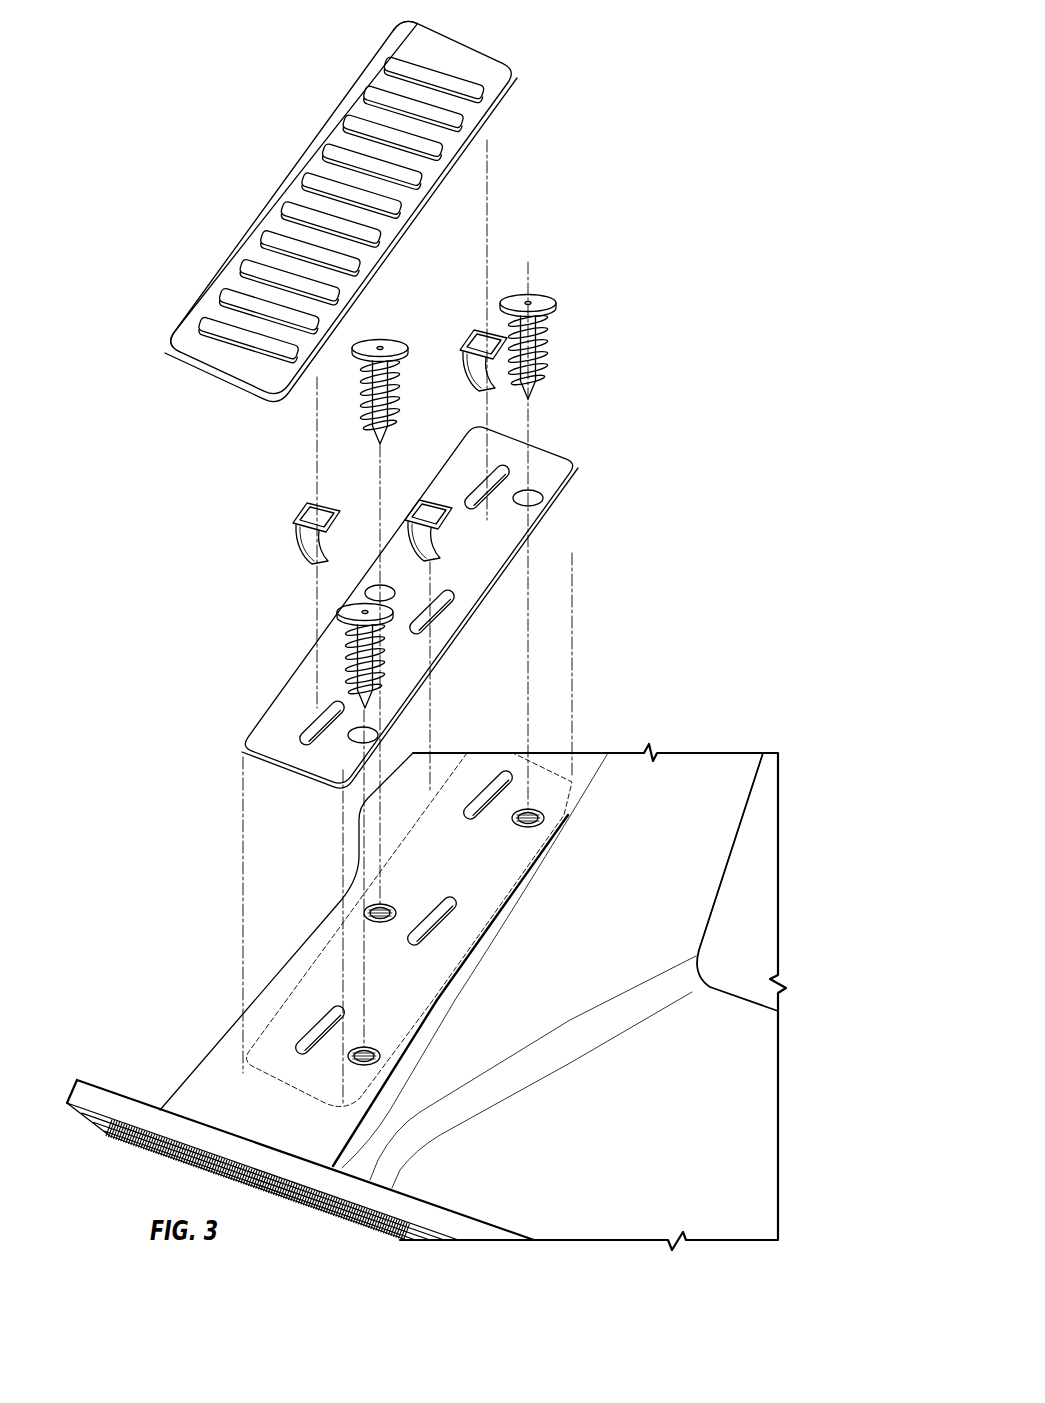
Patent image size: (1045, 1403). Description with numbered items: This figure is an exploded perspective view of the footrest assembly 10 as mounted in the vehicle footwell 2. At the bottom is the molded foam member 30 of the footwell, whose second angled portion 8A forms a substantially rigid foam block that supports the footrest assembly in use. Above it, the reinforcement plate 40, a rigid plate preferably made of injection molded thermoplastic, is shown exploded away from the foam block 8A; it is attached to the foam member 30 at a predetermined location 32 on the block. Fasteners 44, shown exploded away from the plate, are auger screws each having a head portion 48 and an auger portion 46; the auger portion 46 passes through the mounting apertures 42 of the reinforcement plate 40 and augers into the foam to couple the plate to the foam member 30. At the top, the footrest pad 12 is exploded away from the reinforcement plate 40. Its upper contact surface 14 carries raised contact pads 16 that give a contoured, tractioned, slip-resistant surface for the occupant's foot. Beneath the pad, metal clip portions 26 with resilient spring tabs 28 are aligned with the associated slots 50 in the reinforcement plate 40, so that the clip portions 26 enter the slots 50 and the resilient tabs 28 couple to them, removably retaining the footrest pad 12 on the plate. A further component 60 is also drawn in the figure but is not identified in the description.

The footwell 2 is at (718, 826).
The second angled portion 8A is at (613, 903).
The footrest assembly 10 is at (624, 172).
The footrest pad 12 is at (291, 148).
The upper contact surface 14 is at (202, 297).
The raised contact pads 16 is at (248, 263).
The metal clip portion 26 is at (478, 335).
The resilient spring tabs 28 is at (478, 383).
The foam member 30 is at (212, 1070).
The predetermined location 32 is at (493, 895).
The reinforcement plate 40 is at (560, 523).
The mounting apertures 42 is at (535, 490).
The fasteners 44 is at (385, 340).
The auger portion 46 is at (363, 427).
The head portion 48 is at (356, 360).
The slots 50 is at (485, 504).
The mounting plate 60 is at (503, 674).